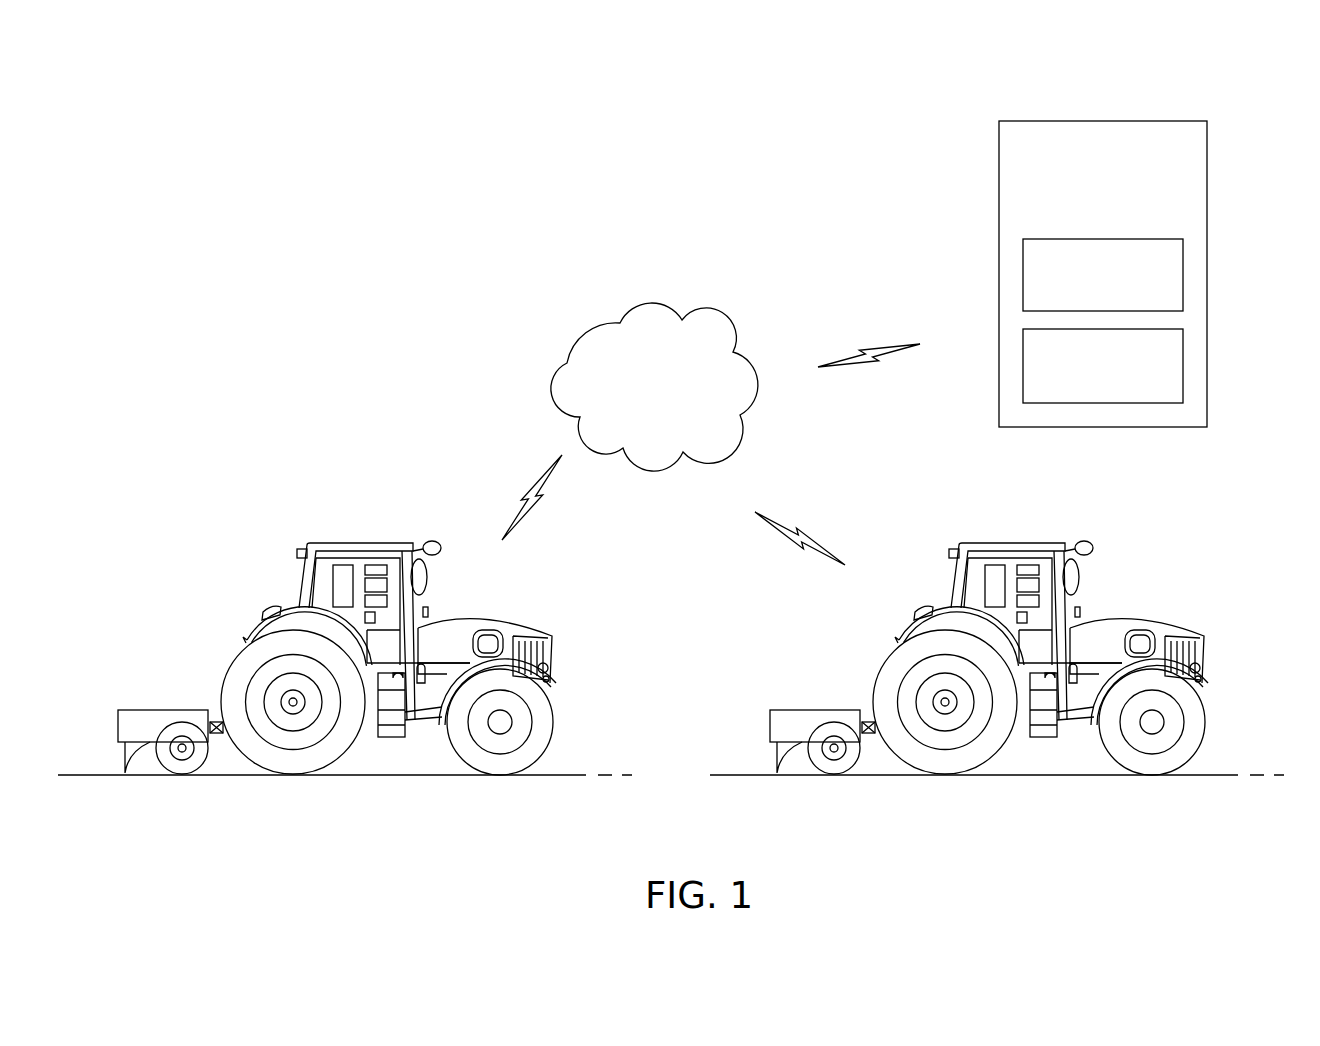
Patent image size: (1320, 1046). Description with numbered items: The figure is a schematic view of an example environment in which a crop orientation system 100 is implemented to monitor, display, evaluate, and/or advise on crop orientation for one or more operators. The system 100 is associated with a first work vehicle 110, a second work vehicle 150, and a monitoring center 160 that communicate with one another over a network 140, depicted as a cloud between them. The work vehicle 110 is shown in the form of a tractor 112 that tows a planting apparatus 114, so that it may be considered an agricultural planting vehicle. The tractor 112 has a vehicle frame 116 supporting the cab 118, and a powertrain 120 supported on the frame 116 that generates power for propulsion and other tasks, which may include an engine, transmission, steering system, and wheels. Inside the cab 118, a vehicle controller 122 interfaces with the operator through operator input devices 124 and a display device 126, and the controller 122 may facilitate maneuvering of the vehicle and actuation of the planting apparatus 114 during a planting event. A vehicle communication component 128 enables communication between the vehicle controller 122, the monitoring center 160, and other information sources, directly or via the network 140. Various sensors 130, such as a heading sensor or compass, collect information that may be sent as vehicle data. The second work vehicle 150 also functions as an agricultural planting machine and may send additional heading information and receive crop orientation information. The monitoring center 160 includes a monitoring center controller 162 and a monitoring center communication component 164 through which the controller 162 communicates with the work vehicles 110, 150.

The crop orientation system 100 is at (275, 287).
The work vehicle 110 is at (304, 524).
The tractor 112 is at (497, 616).
The planting apparatus 114 is at (163, 710).
The vehicle frame 116 is at (390, 734).
The cab 118 is at (354, 545).
The powertrain 120 is at (447, 653).
The vehicle controller 122 is at (333, 584).
The operator input devices 124 is at (372, 562).
The display device 126 is at (388, 585).
The vehicle communication component 128 is at (390, 602).
The sensors 130 is at (366, 617).
The network 140 is at (580, 322).
The second work vehicle 150 is at (1060, 515).
The monitoring center 160 is at (1102, 120).
The monitoring center controller 162 is at (1183, 277).
The monitoring center communication component 164 is at (1183, 367).